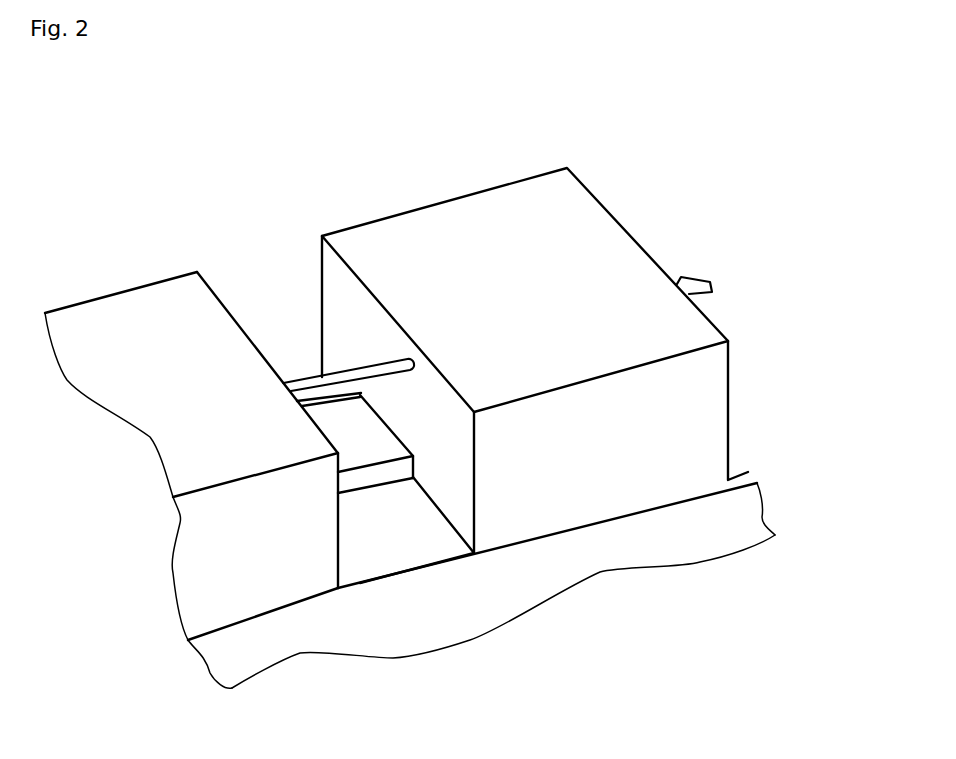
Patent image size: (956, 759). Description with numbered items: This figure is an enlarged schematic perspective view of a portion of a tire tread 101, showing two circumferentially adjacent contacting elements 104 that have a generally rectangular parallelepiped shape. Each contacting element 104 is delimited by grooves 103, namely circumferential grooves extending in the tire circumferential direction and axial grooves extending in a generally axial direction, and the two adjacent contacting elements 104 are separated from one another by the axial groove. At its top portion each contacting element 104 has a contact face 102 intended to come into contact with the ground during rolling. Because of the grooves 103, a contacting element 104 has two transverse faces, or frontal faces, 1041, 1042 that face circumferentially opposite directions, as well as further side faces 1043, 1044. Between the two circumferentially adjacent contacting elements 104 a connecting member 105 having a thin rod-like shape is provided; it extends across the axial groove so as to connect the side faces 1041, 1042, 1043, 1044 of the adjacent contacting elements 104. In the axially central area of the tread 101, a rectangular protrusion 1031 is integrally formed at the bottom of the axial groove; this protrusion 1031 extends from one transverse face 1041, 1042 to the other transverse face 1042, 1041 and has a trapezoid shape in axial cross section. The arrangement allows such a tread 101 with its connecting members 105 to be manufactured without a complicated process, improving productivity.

The tread 101 is at (312, 192).
The contact face 102 is at (166, 360).
The grooves 103 is at (292, 366).
The contacting element 104 is at (63, 307).
The connecting member 105 is at (318, 390).
The rectangular protrusion 1031 is at (348, 412).
The transverse face 1041 is at (441, 468).
The transverse face 1042 is at (341, 505).
The side face 1043 is at (610, 452).
The side face 1044 is at (538, 176).